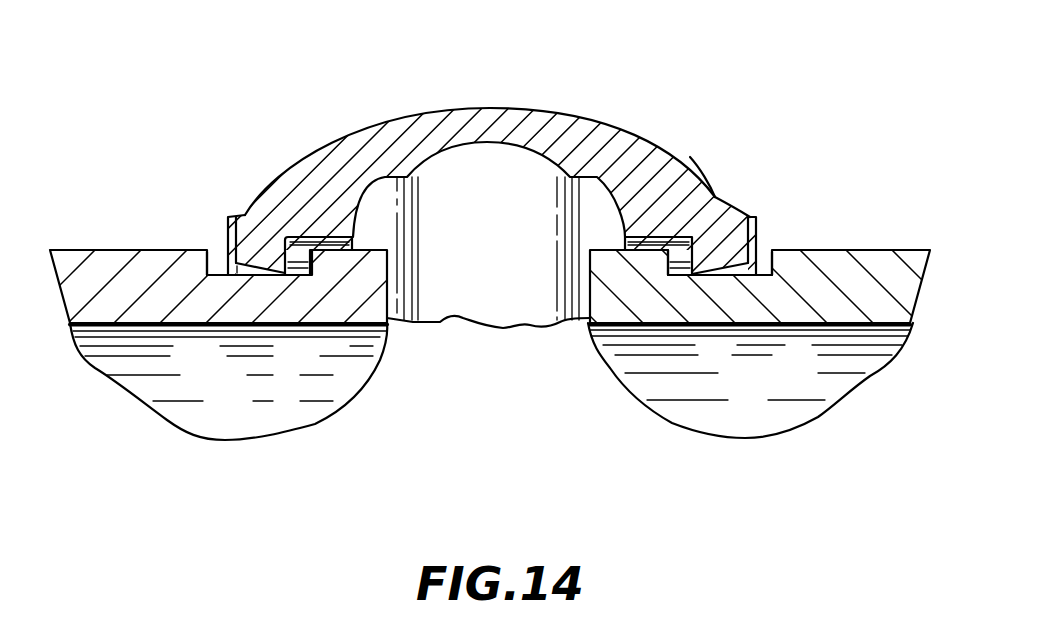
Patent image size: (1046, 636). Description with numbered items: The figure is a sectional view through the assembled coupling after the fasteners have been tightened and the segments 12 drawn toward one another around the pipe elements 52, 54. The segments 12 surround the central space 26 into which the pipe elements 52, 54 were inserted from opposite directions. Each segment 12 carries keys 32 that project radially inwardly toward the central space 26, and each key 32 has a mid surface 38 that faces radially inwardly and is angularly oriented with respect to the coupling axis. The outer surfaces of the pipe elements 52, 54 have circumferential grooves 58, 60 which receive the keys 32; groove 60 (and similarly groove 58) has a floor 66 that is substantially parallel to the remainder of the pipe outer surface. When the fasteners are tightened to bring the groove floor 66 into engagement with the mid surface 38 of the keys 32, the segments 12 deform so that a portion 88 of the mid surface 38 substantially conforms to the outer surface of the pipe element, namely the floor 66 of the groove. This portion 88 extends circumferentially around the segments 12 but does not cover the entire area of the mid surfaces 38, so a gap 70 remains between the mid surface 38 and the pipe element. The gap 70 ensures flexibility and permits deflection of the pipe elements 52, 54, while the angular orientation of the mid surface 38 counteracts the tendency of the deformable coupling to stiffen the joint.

The segment 12 is at (580, 125).
The central space 26 is at (510, 437).
The key 32 is at (236, 262).
The mid surface 38 is at (270, 272).
The pipe element 52 is at (107, 250).
The pipe element 54 is at (863, 263).
The circumferential groove 58 is at (253, 277).
The circumferential groove 60 is at (714, 195).
The floor 66 is at (262, 277).
The gap 70 is at (248, 277).
The portion 88 is at (293, 278).